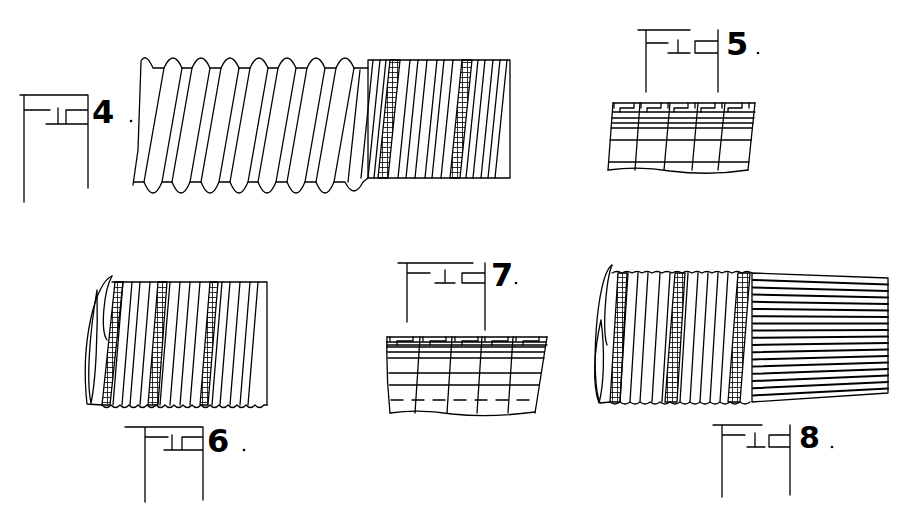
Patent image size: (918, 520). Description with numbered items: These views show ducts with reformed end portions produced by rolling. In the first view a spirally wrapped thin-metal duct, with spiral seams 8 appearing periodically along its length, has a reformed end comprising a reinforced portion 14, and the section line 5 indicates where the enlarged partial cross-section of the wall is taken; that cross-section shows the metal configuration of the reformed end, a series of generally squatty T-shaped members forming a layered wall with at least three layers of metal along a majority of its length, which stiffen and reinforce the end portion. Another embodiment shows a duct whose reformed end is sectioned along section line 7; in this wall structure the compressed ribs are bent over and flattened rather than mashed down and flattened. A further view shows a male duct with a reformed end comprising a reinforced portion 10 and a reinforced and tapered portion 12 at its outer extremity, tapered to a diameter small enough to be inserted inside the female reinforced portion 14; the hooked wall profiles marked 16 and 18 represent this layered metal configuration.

In FIG. 4, the section line 5— 5 is at (446, 108).
In FIG. 6, the section line 7— 7 is at (199, 330).
In FIG. 4, the spiral seam 8 is at (467, 60).
In FIG. 8, the reinforced portion 10 is at (663, 272).
In FIG. 8, the reinforced and tapered portion 12 is at (812, 283).
In FIG. 4, the reinforced portion 14 is at (420, 60).
In FIG. 6, the reinforced portion 14 is at (197, 283).
In FIG. 5, the interlocking helical profile 16 is at (637, 102).
In FIG. 7, the helical strip profile 18 is at (521, 337).